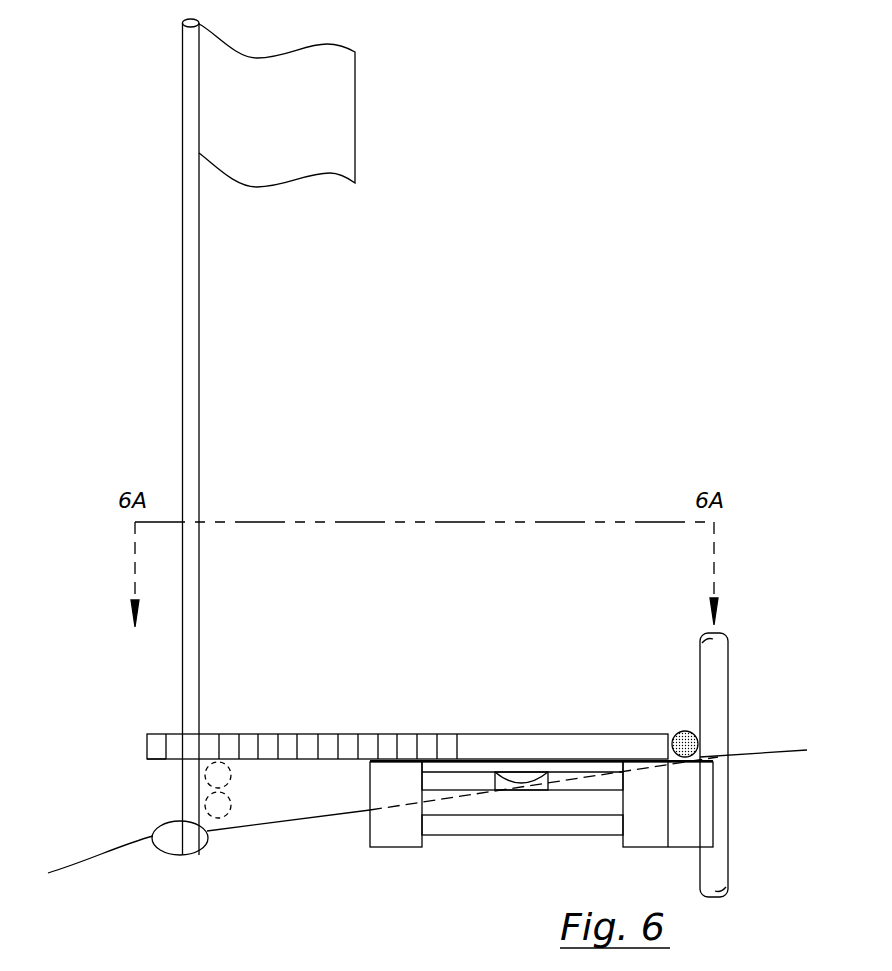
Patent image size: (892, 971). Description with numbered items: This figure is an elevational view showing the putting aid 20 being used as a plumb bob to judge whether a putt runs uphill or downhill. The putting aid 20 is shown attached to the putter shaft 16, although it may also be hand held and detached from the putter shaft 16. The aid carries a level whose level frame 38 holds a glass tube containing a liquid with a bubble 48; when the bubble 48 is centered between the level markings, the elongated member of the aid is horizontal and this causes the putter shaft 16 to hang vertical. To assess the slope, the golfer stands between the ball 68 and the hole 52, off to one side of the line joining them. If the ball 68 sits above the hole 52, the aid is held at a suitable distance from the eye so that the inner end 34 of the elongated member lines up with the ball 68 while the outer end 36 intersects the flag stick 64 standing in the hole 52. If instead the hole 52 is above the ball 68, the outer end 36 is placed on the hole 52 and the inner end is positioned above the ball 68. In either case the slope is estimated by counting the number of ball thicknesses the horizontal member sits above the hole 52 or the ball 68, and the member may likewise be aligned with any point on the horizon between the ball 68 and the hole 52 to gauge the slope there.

The putter shaft 16 is at (723, 685).
The putting aid 20 is at (310, 728).
The inner end of elongated member 34 is at (682, 731).
The outer end of elongated member 36 is at (147, 752).
The level frame 38 is at (381, 854).
The bubble 48 is at (522, 777).
The hole 52 is at (213, 837).
The flag stick 64 is at (190, 598).
The ball 68 is at (693, 729).